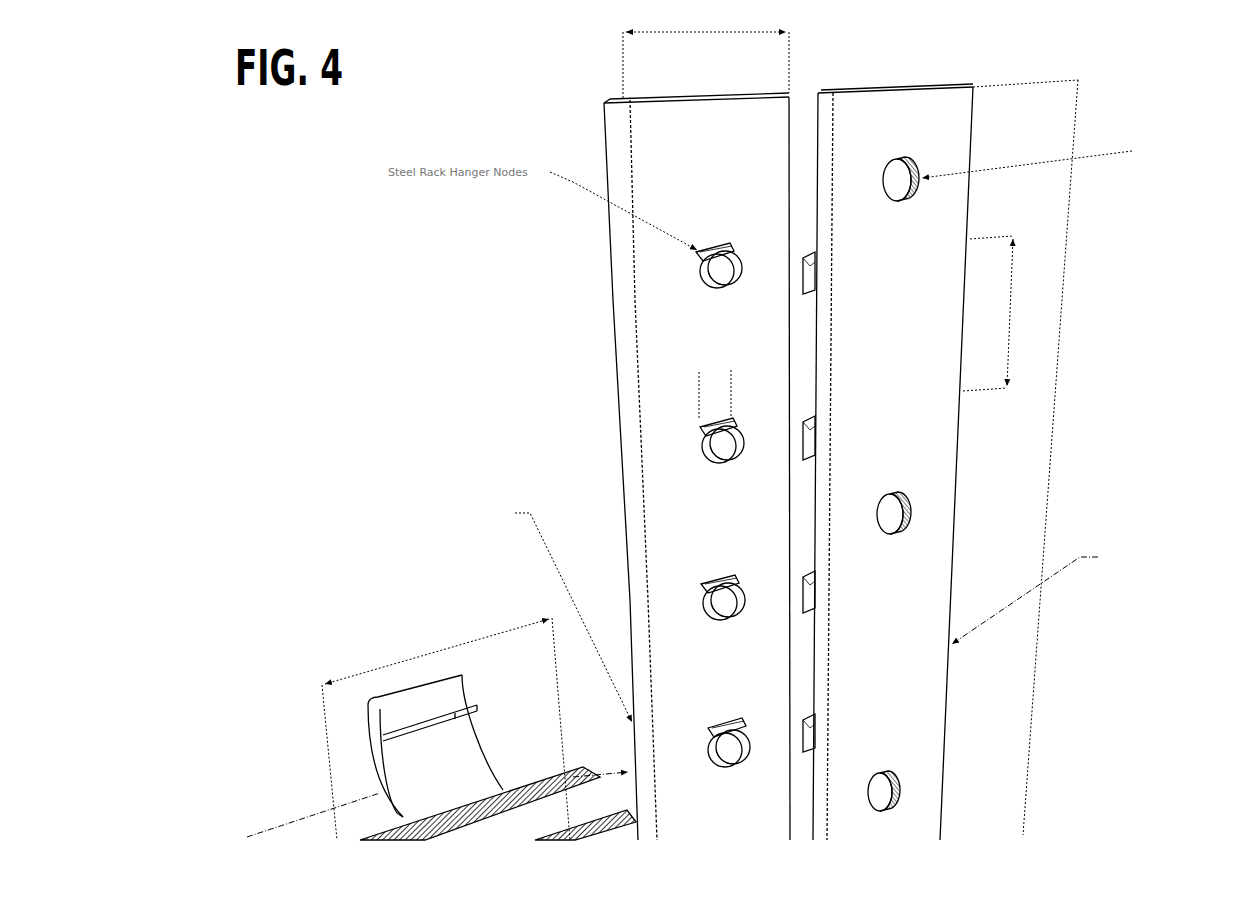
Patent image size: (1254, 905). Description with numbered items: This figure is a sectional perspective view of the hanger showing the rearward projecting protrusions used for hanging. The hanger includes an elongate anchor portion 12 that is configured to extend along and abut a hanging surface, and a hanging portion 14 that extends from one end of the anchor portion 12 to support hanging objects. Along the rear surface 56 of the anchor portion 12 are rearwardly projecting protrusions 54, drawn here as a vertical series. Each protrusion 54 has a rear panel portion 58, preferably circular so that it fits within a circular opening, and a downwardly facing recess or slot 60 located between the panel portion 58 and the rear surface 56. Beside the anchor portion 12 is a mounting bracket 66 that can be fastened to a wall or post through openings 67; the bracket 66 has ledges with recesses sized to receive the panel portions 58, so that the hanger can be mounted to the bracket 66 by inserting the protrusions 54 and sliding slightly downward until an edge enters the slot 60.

The anchor portion 12 is at (645, 136).
The hanging portion 14 is at (412, 737).
The rearwardly projecting protrusions 54 is at (731, 266).
The rear surface 56 is at (748, 142).
The rear panel portion 58 is at (722, 283).
The downwardly facing recess or slot 60 is at (712, 590).
The mounting bracket 66 is at (917, 112).
The openings 67 is at (912, 158).